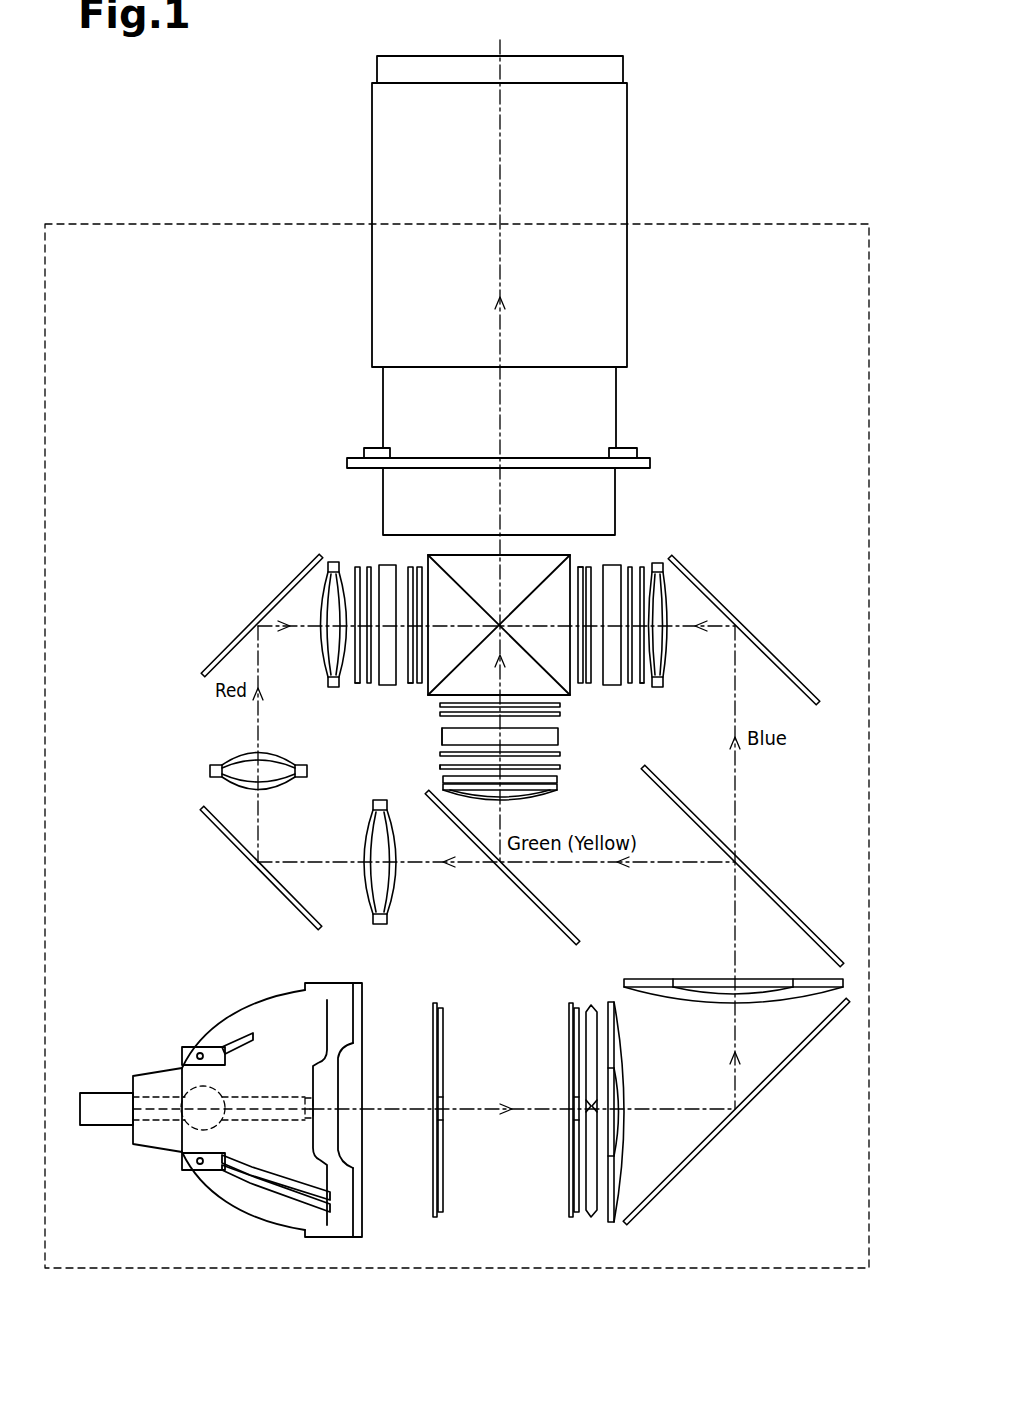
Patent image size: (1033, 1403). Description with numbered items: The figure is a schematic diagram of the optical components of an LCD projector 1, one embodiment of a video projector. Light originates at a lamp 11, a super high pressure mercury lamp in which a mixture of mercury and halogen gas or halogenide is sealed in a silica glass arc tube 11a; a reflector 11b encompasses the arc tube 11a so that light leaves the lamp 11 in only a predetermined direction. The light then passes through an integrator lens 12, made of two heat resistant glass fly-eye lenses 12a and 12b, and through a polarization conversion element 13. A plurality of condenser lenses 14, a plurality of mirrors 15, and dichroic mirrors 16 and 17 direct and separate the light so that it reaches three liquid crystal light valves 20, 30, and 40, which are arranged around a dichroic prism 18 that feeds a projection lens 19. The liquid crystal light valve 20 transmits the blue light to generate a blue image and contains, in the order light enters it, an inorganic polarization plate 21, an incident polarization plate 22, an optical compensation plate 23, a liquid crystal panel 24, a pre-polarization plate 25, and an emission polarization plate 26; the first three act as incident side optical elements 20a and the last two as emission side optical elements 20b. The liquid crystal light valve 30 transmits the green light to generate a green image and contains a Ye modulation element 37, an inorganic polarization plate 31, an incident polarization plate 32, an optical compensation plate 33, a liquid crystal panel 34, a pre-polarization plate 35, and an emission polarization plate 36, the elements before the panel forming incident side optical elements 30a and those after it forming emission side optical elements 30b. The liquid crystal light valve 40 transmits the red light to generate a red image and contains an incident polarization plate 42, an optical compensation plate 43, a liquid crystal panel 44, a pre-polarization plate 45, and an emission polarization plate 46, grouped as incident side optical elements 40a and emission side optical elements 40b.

The LCD projector 1 is at (765, 224).
The lamp 11 is at (153, 985).
The arc tube 11a is at (188, 1046).
The reflector 11b is at (250, 1003).
The integrator lens 12 is at (587, 963).
The fly-eye lens 12a is at (440, 1003).
The fly-eye lens 12b is at (571, 1003).
The polarization conversion element 13 is at (588, 1222).
The condenser lens 14 is at (330, 692).
The mirror 15 is at (212, 661).
The dichroic mirror 16 is at (811, 925).
The dichroic mirror 17 is at (577, 933).
The dichroic prism 18 is at (462, 553).
The projection lens 19 is at (640, 346).
The liquid crystal light valve 20 is at (563, 487).
The incident side optical elements 20a is at (639, 692).
The emission side optical elements 20b is at (577, 552).
The inorganic polarization plate 21 is at (660, 564).
The incident polarization plate 22 is at (642, 564).
The optical compensation plate 23 is at (630, 564).
The liquid crystal panel 24 is at (612, 564).
The pre-polarization plate 25 is at (589, 564).
The emission polarization plate 26 is at (580, 564).
The liquid crystal light valve 30 is at (630, 700).
The incident side optical elements 30a is at (432, 772).
The emission side optical elements 30b is at (433, 740).
The inorganic polarization plate 31 is at (557, 780).
The incident polarization plate 32 is at (560, 767).
The optical compensation plate 33 is at (560, 754).
The liquid crystal panel 34 is at (558, 736).
The pre-polarization plate 35 is at (560, 714).
The emission polarization plate 36 is at (560, 705).
The Ye modulation element 37 is at (557, 793).
The liquid crystal light valve 40 is at (442, 487).
The incident side optical elements 40a is at (362, 692).
The emission side optical elements 40b is at (413, 693).
The incident polarization plate 42 is at (357, 564).
The optical compensation plate 43 is at (369, 564).
The liquid crystal panel 44 is at (387, 564).
The pre-polarization plate 45 is at (410, 564).
The emission polarization plate 46 is at (419, 564).